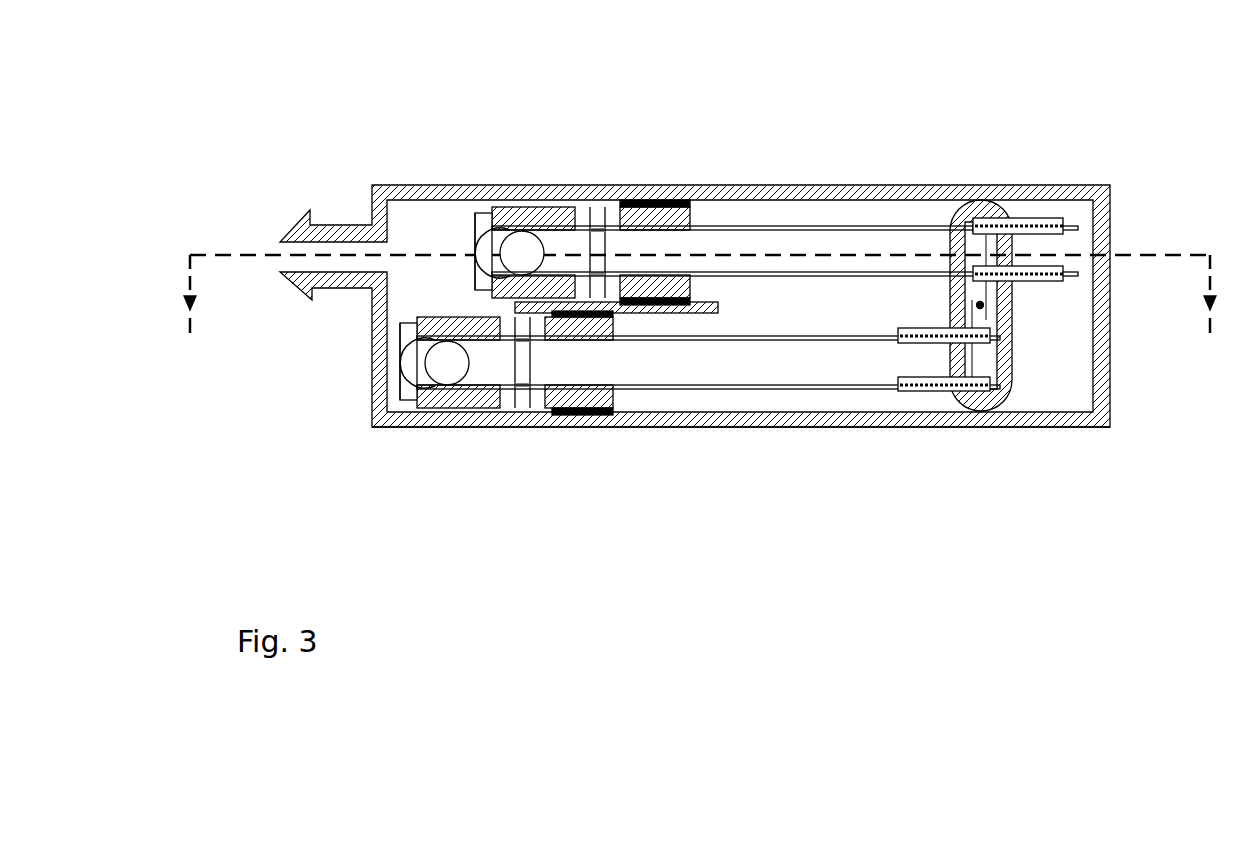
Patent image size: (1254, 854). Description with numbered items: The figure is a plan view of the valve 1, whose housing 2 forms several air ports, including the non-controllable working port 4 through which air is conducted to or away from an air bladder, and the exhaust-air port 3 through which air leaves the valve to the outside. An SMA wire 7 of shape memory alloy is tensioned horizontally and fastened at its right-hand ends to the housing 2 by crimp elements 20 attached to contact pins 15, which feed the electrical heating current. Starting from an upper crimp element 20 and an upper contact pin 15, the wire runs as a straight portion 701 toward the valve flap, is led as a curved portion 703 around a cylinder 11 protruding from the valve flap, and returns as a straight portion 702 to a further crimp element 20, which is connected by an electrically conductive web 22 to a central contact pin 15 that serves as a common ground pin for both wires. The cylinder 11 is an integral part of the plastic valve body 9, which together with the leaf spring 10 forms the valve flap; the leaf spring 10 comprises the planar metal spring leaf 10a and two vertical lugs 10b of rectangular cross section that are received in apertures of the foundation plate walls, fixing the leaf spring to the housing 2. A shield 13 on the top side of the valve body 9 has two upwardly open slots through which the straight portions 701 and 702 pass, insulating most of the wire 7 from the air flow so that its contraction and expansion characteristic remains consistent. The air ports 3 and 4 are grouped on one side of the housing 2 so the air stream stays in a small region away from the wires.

The valve 1 is at (1138, 148).
The housing 2 is at (1110, 228).
The air port 3 is at (512, 427).
The working port 4 is at (296, 262).
The SMA wire 7 is at (747, 293).
The straight portion 701 is at (806, 226).
The straight portion 702 is at (827, 272).
The valve body 9 is at (476, 245).
The leaf spring 10 is at (558, 207).
The spring leaf 10a is at (490, 212).
The lugs 10b is at (660, 207).
The cylinder 11 is at (515, 262).
The shield 13 is at (606, 250).
The contact pins 15 is at (978, 222).
The crimp elements 20 is at (1050, 218).
The conductive web 22 is at (977, 304).
The curved portion 703 is at (500, 250).